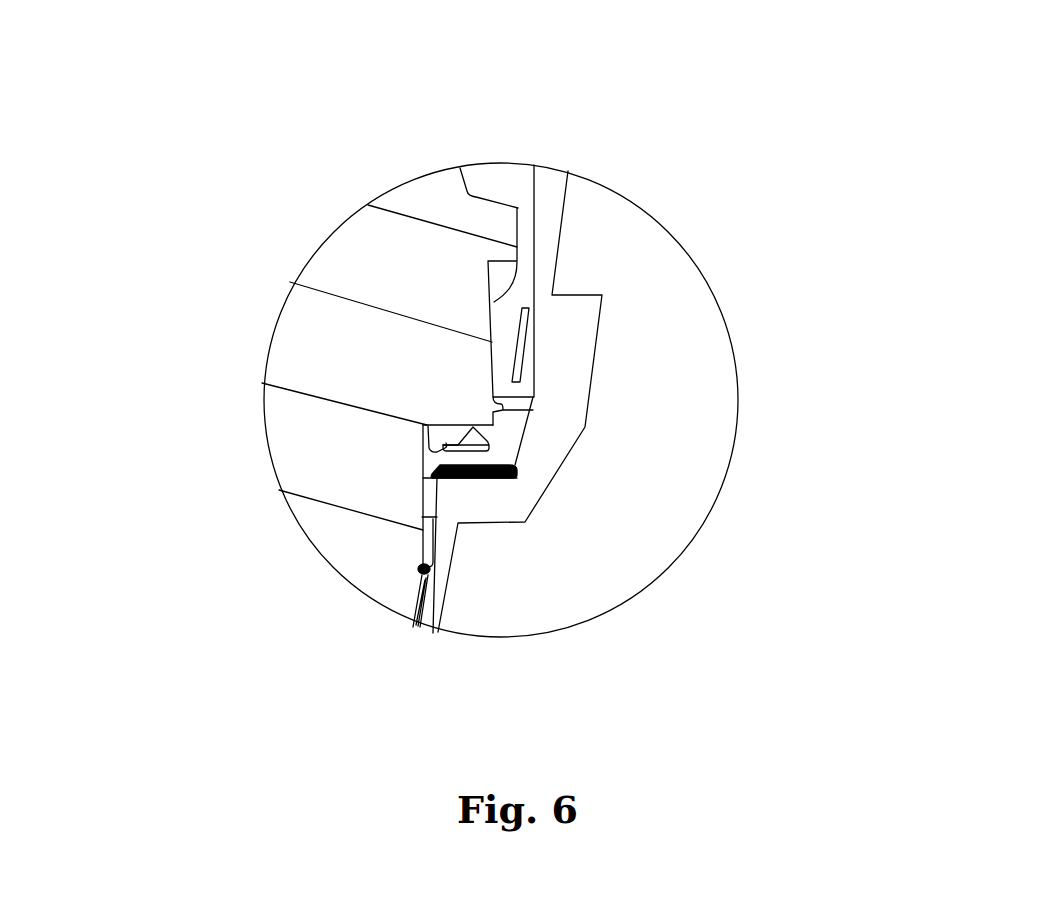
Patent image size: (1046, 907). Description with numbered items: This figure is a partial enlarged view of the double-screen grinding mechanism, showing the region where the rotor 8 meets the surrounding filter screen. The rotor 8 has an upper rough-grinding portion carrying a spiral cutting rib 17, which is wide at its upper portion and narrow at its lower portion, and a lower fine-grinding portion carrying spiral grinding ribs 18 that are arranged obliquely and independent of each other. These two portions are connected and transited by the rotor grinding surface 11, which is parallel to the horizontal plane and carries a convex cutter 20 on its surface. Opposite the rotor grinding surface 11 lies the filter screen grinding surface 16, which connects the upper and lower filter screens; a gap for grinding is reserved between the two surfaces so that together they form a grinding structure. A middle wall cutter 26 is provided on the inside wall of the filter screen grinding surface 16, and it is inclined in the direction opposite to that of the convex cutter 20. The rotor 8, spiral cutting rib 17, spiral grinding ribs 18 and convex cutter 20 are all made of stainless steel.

The rotor 8 is at (368, 318).
The rotor grinding surface 11 is at (457, 422).
The filter screen grinding surface 16 is at (665, 632).
The spiral cutting rib 17 is at (510, 223).
The spiral grinding ribs 18 is at (418, 567).
The convex cutter 20 is at (442, 438).
The middle wall cutter 26 is at (510, 463).